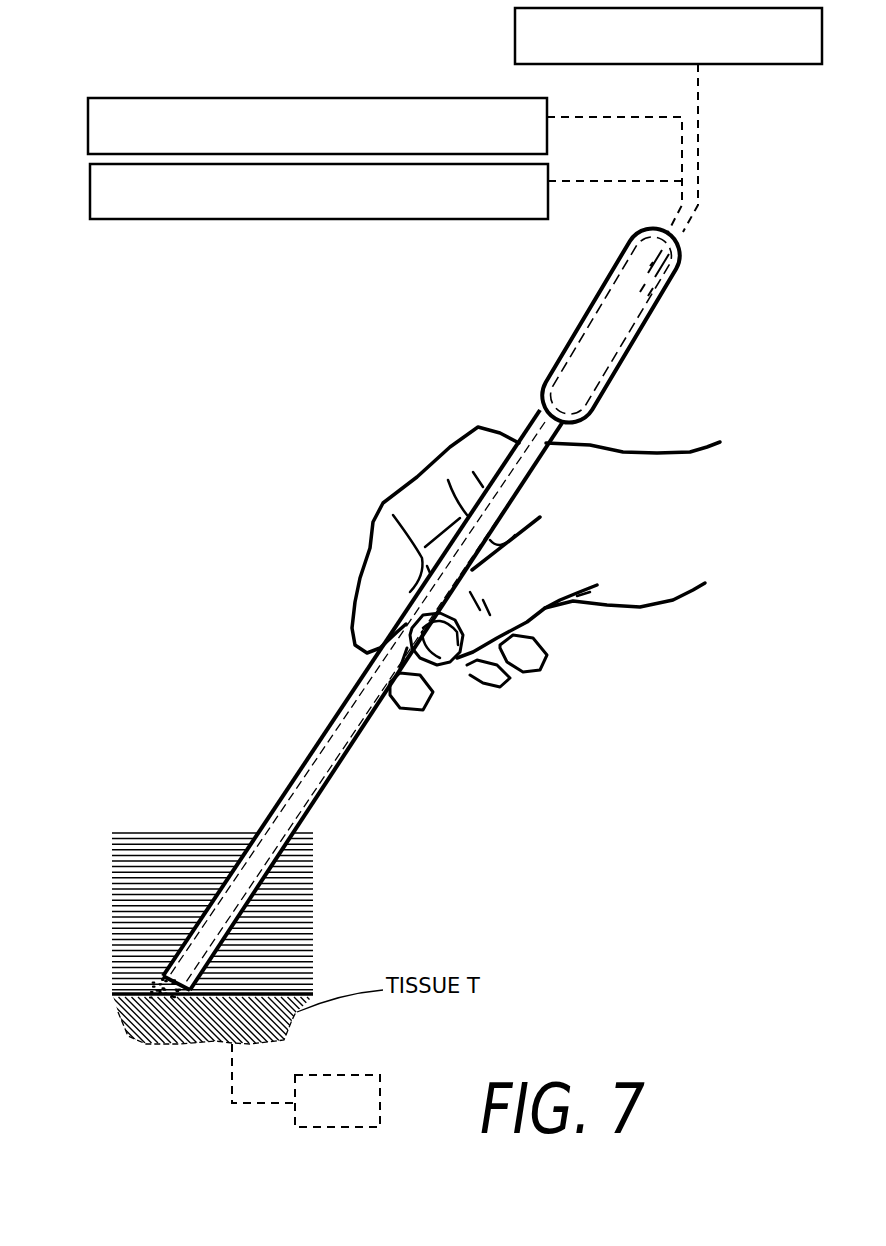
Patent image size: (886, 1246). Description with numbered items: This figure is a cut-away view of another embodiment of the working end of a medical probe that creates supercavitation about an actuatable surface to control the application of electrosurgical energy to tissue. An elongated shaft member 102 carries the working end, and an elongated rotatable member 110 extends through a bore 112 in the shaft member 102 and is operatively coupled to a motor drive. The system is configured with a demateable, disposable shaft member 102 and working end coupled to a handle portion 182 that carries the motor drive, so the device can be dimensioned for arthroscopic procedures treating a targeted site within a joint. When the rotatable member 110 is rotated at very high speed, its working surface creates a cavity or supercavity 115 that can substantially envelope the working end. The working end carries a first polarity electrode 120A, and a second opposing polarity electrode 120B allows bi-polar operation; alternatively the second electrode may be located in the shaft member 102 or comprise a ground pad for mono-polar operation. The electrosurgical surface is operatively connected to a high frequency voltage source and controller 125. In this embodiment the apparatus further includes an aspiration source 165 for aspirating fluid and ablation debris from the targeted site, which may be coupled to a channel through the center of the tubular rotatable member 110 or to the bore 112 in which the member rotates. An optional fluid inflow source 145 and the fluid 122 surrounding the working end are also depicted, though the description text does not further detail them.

The high frequency voltage source and controller 125 is at (668, 120).
The aspiration source 165 is at (385, 165).
The optional fluid inflow source 145 is at (386, 191).
The handle portion 182 is at (662, 305).
The shaft member 102 is at (340, 712).
The bore 112 is at (202, 908).
The rotatable member 110 is at (175, 950).
The supercavity 115 is at (163, 976).
The first polarity electrode 120A is at (158, 984).
The conductive fluid 122 is at (300, 879).
The second opposing polarity electrode 120B is at (306, 1085).